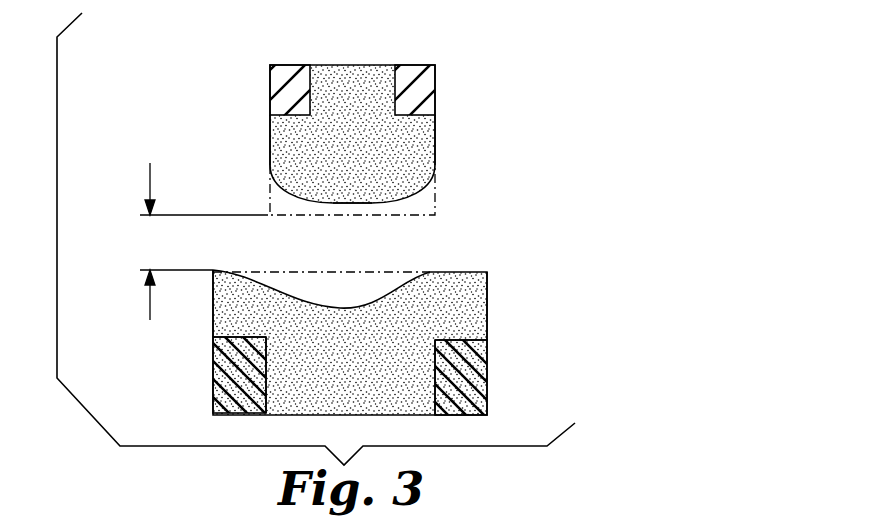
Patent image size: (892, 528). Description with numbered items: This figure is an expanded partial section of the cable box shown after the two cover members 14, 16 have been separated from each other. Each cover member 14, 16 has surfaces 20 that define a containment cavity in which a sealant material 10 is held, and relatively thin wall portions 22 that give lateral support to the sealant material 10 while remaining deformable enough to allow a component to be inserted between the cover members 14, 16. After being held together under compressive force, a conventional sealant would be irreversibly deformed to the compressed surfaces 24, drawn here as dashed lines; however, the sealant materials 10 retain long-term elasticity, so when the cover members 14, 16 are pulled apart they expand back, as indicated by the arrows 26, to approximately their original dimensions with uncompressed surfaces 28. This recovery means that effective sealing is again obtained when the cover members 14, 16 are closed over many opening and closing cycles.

The sealant material 10 is at (352, 72).
The cover member 14 is at (336, 237).
The cover member 16 is at (542, 249).
The surfaces 20 is at (278, 97).
The wall portions 22 is at (272, 153).
The compressed surfaces 24 is at (362, 205).
The arrows 26 is at (150, 175).
The uncompressed surfaces 28 is at (400, 272).